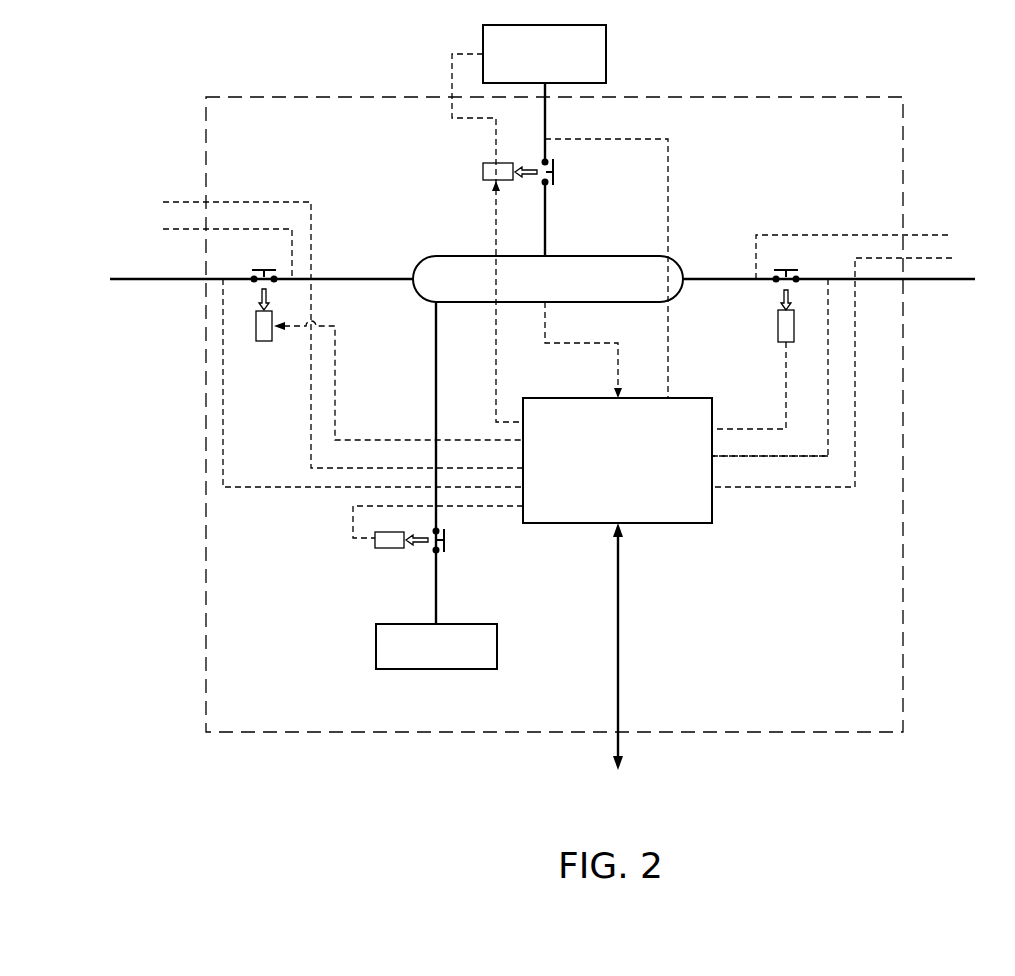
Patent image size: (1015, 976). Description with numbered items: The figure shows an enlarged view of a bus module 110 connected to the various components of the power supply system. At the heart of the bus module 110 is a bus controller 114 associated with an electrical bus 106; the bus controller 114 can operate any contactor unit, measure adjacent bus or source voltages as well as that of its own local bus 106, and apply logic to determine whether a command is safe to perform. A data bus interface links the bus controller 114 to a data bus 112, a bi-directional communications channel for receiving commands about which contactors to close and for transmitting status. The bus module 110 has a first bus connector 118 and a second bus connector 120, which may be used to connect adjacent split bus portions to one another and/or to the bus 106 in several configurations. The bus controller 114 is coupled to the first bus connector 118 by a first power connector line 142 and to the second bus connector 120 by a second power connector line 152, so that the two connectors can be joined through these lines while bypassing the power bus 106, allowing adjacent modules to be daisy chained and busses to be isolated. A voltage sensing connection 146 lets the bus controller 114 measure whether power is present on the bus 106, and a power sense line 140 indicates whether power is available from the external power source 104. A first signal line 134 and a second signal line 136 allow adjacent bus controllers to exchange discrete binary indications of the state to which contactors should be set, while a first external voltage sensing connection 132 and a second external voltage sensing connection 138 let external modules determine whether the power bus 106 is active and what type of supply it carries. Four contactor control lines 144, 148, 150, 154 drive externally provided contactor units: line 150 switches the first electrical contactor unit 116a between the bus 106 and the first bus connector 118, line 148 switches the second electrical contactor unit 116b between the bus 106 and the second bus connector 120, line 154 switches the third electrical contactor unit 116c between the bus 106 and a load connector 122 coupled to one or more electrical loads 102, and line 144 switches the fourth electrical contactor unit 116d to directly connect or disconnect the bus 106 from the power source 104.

The electrical loads 102 is at (376, 650).
The external power source 104 is at (606, 54).
The electrical bus 106 is at (598, 256).
The bus module 110 is at (283, 98).
The data bus 112 is at (619, 700).
The bus controller 114 is at (667, 523).
The first electrical contactor unit 116a is at (264, 341).
The second electrical contactor unit 116b is at (778, 326).
The third electrical contactor unit 116c is at (382, 548).
The fourth electrical contactor unit 116d is at (483, 170).
The first bus connector 118 is at (150, 307).
The second bus connector 120 is at (956, 287).
The load connector 122 is at (437, 598).
The first external voltage sensing connection 132 is at (177, 229).
The first signal line 134 is at (262, 202).
The second signal line 136 is at (855, 430).
The second external voltage sensing connection 138 is at (835, 235).
The power sense line 140 is at (668, 184).
The first power connector line 142 is at (263, 487).
The contactor control line 144 is at (497, 345).
The voltage sensing connection 146 is at (580, 343).
The contactor control line 148 is at (735, 429).
The contactor control line 150 is at (385, 440).
The second power connector line 152 is at (779, 457).
The contactor control line 154 is at (480, 506).